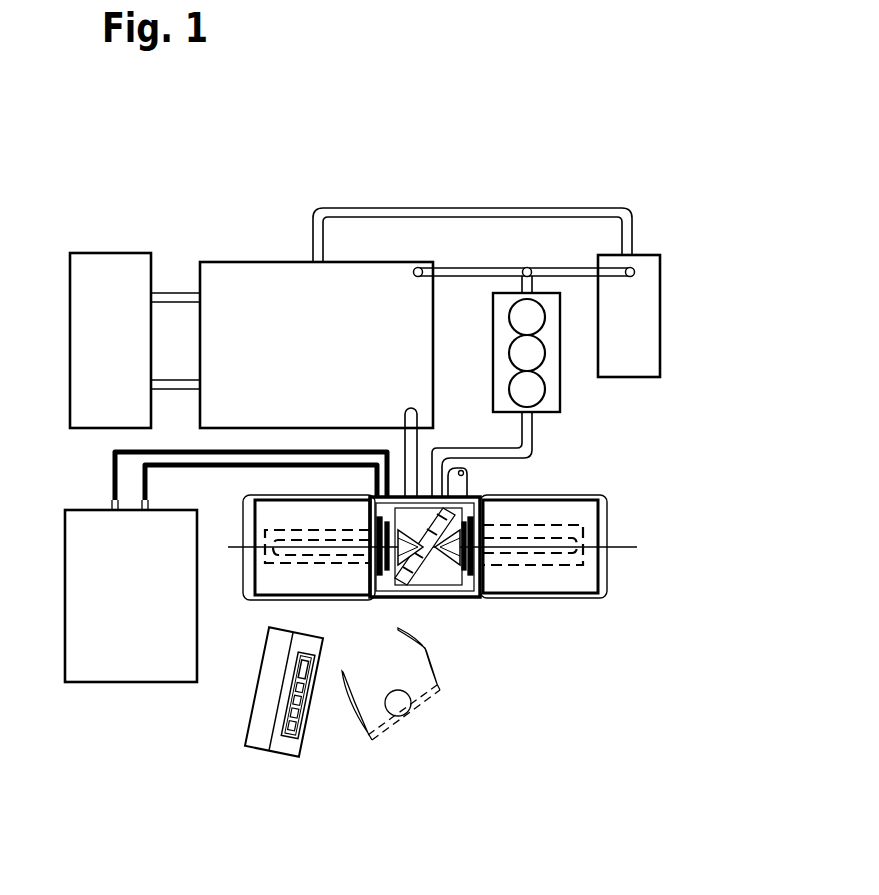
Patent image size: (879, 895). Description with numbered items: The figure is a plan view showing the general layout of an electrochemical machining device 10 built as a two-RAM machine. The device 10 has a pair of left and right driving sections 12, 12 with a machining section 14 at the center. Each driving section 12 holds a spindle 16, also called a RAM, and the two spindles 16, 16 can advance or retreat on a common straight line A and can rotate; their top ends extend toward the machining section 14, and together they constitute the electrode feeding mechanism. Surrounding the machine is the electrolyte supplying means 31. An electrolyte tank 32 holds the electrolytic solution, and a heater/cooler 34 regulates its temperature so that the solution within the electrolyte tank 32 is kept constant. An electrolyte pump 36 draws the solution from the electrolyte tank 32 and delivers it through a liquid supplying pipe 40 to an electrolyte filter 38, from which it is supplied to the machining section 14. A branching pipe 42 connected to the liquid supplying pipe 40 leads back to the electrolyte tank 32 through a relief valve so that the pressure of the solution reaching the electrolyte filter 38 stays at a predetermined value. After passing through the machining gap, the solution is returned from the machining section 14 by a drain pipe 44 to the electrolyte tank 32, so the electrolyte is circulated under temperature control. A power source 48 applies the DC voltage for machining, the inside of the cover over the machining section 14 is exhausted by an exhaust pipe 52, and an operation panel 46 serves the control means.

The electrochemical machining device 10 is at (595, 620).
The driving section 12 is at (607, 575).
The machining section 14 is at (465, 600).
The spindle 16 is at (578, 530).
The electrolyte supplying means 31 is at (661, 221).
The electrolyte tank 32 is at (233, 262).
The heater/cooler 34 is at (110, 253).
The electrolyte pump 36 is at (660, 312).
The electrolyte filter 38 is at (560, 390).
The liquid supplying pipe 40 is at (578, 268).
The branching pipe 42 is at (470, 268).
The drain pipe 44 is at (418, 443).
The operation panel 46 is at (303, 749).
The power source 48 is at (85, 682).
The exhaust pipe 52 is at (468, 478).
The spindle reciprocating direction A is at (637, 547).